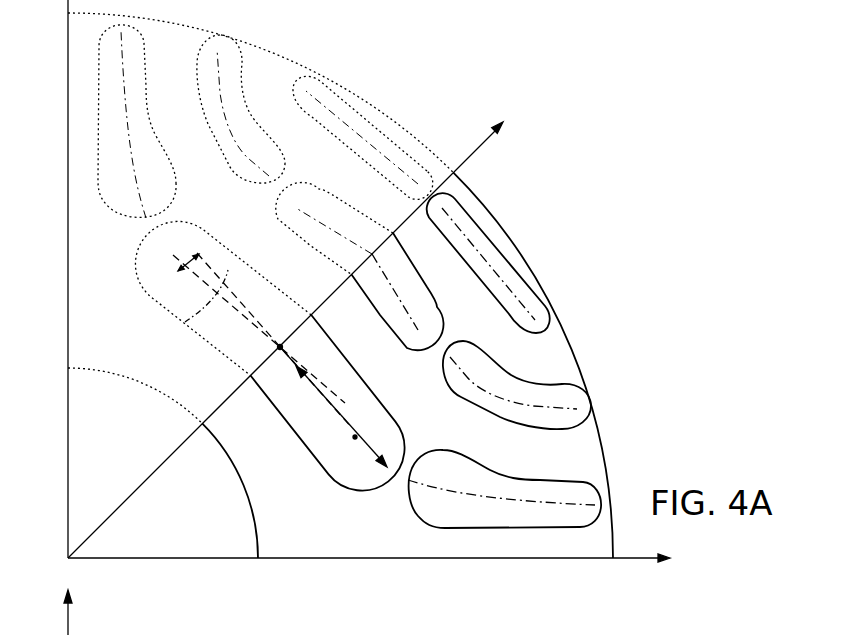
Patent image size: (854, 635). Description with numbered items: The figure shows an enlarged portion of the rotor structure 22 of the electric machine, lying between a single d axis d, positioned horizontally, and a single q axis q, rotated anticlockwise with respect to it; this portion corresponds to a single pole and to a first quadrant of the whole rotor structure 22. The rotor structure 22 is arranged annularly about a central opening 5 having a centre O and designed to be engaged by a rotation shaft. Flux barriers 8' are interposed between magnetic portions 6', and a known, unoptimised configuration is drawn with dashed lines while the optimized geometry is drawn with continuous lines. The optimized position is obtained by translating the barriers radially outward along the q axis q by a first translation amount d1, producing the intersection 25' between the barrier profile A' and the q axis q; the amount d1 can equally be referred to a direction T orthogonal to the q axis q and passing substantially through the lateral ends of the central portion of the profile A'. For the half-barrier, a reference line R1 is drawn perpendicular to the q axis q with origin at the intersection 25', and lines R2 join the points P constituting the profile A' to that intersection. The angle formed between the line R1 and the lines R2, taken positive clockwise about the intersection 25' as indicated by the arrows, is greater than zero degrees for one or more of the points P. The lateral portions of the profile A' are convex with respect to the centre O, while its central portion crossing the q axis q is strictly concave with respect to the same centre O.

The rotor structure 22 is at (591, 67).
The central opening 5 is at (226, 540).
The magnetic portions 6' is at (349, 276).
The flux barriers 8' is at (269, 369).
The intersection 25' is at (280, 360).
The q axis q is at (492, 132).
The d axis d is at (640, 561).
The centre O is at (57, 317).
The first translation amount d1 is at (190, 256).
The direction orthogonal to the q axis T is at (185, 322).
The reference line R1 is at (228, 270).
The reference lines R2 is at (372, 432).
The points P is at (355, 440).
The barrier profile A' is at (371, 506).